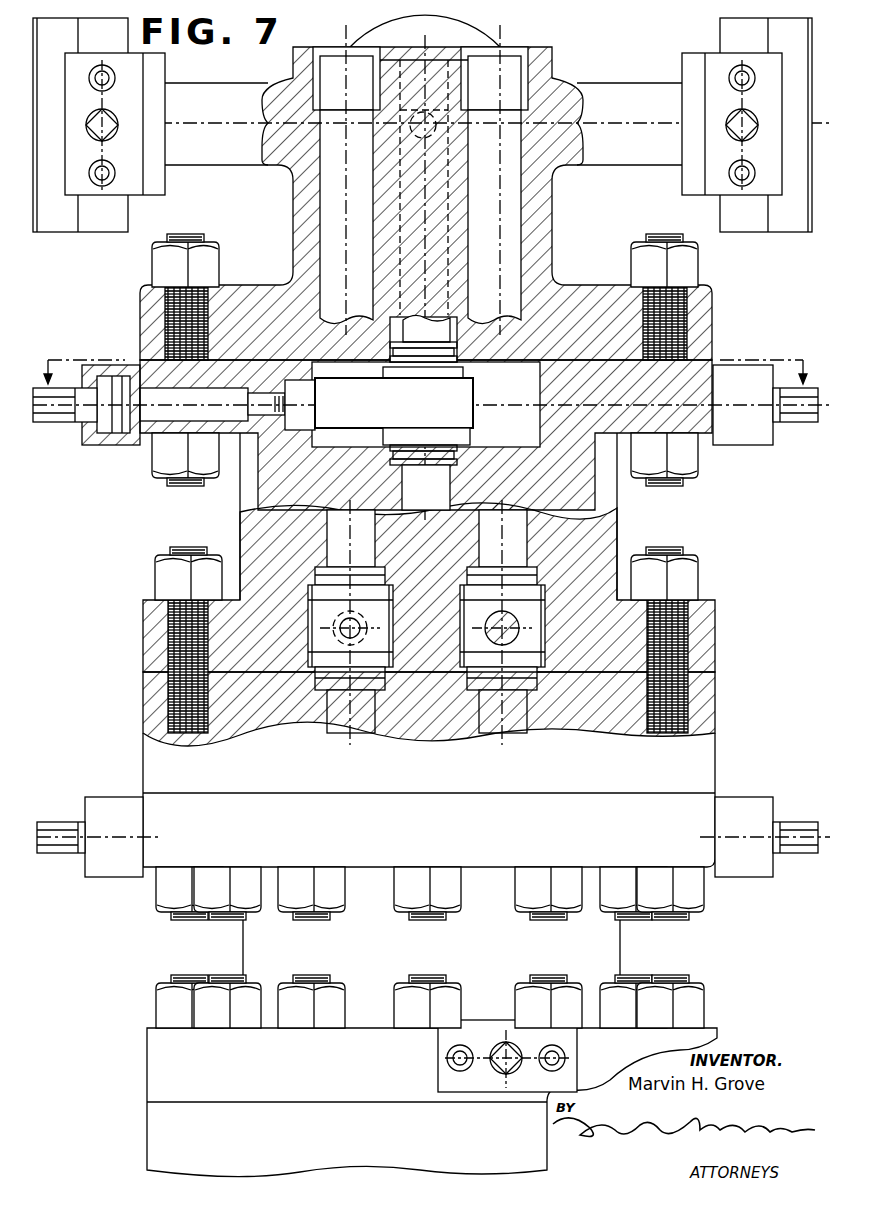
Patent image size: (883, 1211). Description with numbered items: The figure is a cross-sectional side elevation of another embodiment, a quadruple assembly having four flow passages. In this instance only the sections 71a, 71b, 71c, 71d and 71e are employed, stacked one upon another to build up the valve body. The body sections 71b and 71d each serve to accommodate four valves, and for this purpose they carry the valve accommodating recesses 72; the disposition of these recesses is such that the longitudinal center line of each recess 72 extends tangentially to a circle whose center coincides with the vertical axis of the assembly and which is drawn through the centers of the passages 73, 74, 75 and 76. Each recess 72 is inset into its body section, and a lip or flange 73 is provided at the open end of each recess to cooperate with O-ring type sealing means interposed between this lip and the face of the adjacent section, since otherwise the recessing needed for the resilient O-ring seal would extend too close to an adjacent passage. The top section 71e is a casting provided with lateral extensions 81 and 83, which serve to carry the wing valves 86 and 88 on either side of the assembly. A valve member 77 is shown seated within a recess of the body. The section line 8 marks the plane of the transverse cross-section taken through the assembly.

The section line 8- 8 is at (424, 362).
The body section 71a is at (156, 1140).
The body section 71b is at (249, 950).
The body section 71c is at (152, 720).
The body section 71d is at (242, 528).
The top section 71e is at (301, 219).
The valve accommodating recess 72 is at (541, 421).
The passage 73 is at (328, 78).
The passage 74 is at (440, 490).
The passage 75 is at (504, 68).
The passage 76 is at (430, 64).
The valve gate member 77 is at (537, 368).
The lateral extension 81 is at (235, 152).
The lateral extension 83 is at (624, 152).
The wing valve 86 is at (84, 234).
The wing valve 88 is at (791, 234).